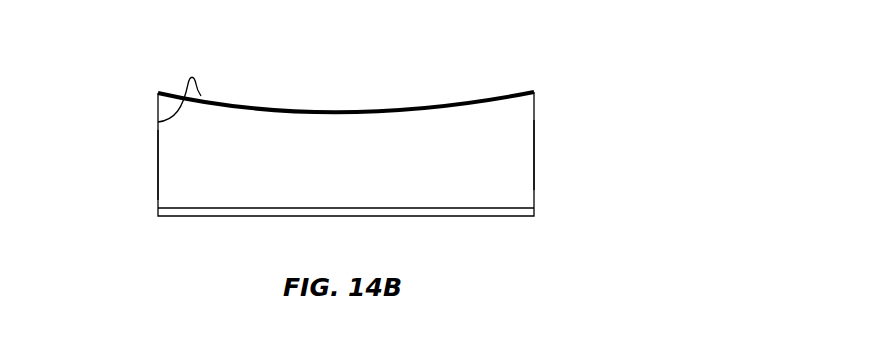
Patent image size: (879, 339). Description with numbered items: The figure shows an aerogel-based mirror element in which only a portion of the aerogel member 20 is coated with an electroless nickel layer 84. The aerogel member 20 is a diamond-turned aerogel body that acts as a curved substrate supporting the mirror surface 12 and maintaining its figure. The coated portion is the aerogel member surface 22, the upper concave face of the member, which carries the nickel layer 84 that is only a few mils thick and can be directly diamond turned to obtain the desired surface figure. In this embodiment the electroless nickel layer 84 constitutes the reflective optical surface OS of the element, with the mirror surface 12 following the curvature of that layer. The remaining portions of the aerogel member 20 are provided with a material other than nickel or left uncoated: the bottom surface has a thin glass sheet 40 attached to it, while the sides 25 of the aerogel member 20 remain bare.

The mirror surface 12 is at (384, 101).
The aerogel member 20 is at (368, 170).
The aerogel member surface 22 is at (158, 122).
The sides 25 is at (158, 168).
The thin glass sheet 40 is at (510, 217).
The electroless nickel layer 84 is at (492, 93).
The reflective optical surface OS is at (253, 87).